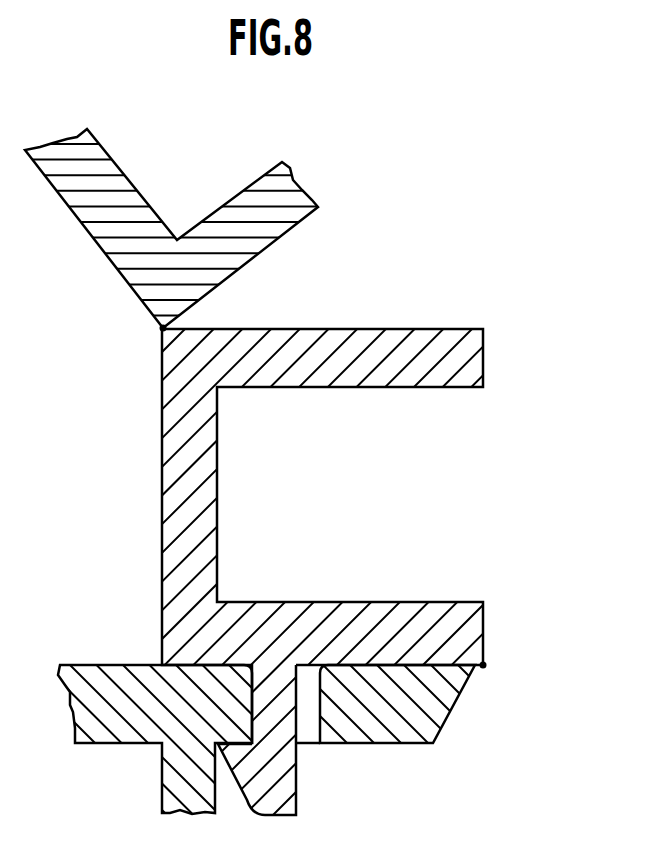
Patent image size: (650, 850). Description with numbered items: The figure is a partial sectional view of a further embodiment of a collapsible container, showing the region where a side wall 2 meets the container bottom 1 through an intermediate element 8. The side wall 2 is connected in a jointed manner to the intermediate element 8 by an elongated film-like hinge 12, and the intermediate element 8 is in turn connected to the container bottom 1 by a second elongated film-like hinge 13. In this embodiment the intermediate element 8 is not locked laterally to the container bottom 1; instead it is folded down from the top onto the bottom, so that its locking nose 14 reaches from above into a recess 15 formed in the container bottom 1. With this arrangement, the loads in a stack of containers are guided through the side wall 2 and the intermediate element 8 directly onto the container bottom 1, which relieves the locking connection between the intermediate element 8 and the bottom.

The container bottom 1 is at (87, 668).
The side wall 2 is at (112, 247).
The intermediate element 8 is at (424, 338).
The film-like hinge 12 is at (160, 329).
The film-like hinge 13 is at (485, 667).
The locking nose 14 is at (284, 801).
The recess 15 is at (323, 733).